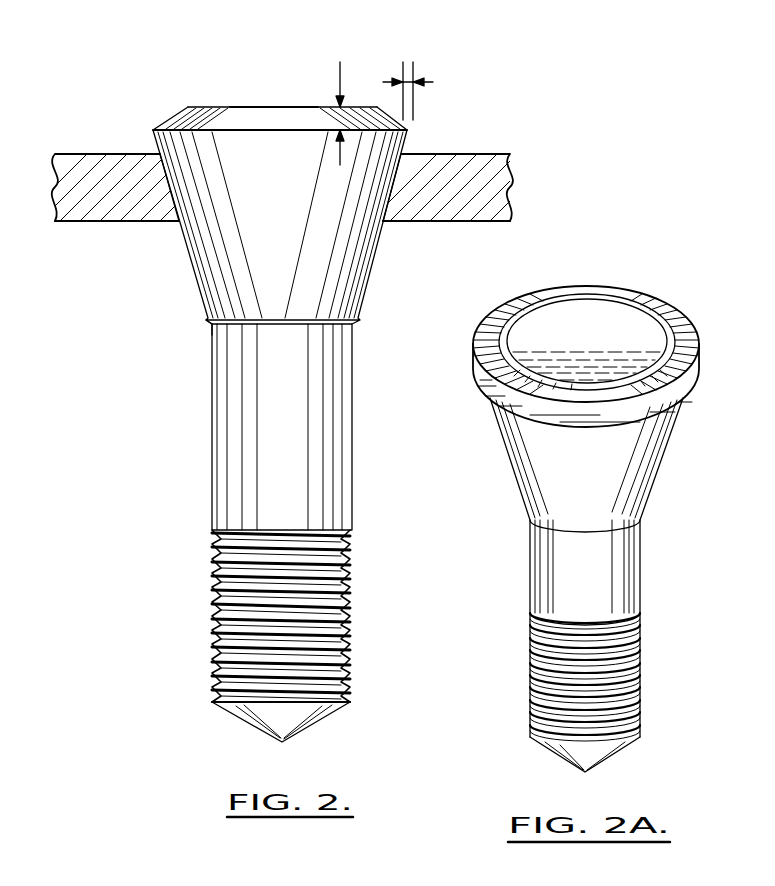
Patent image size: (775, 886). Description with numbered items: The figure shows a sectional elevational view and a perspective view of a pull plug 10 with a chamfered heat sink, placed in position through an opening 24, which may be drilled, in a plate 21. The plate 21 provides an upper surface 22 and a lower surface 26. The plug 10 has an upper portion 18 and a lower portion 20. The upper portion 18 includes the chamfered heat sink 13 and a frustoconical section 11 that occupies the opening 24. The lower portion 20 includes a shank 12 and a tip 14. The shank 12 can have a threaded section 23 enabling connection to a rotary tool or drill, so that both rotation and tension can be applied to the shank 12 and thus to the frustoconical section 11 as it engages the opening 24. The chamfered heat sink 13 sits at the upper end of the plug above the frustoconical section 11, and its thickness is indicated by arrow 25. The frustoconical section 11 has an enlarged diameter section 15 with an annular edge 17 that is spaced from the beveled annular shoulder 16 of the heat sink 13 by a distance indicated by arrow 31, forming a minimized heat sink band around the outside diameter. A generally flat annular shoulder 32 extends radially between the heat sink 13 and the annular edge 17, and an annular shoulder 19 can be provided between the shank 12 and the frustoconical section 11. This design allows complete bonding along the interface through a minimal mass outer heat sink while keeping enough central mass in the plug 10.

In FIG. 2, the pull plug 10 is at (527, 96).
In FIG. 2A, the pull plug 10 is at (685, 272).
In FIG. 2, the frustoconical section 11 is at (274, 267).
In FIG. 2A, the frustoconical section 11 is at (643, 470).
In FIG. 2, the shank 12 is at (332, 430).
In FIG. 2A, the shank 12 is at (553, 577).
In FIG. 2, the chamfered heat sink 13 is at (287, 107).
In FIG. 2A, the chamfered heat sink 13 is at (628, 325).
In FIG. 2, the tip 14 is at (245, 718).
In FIG. 2A, the tip 14 is at (568, 757).
In FIG. 2, the enlarged diameter section 15 is at (411, 141).
In FIG. 2A, the enlarged diameter section 15 is at (702, 375).
In FIG. 2, the beveled annular shoulder 16 is at (250, 109).
In FIG. 2A, the beveled annular shoulder 16 is at (576, 398).
In FIG. 2, the annular edge 17 is at (296, 131).
In FIG. 2A, the annular edge 17 is at (689, 326).
In FIG. 2, the upper portion 18 is at (173, 118).
In FIG. 2, the annular shoulder 19 is at (213, 336).
In FIG. 2, the lower portion 20 is at (347, 703).
In FIG. 2, the plate 21 is at (511, 202).
In FIG. 2, the upper surface 22 is at (95, 153).
In FIG. 2, the threaded section 23 is at (212, 655).
In FIG. 2A, the threaded section 23 is at (637, 652).
In FIG. 2, the opening 24 is at (174, 224).
In FIG. 2, the arrow indicating heat sink thickness 25 is at (340, 66).
In FIG. 2, the lower surface 26 is at (78, 222).
In FIG. 2, the arrow indicating heat sink band distance 31 is at (416, 80).
In FIG. 2, the flat annular shoulder 32 is at (407, 130).
In FIG. 2A, the flat annular shoulder 32 is at (528, 305).